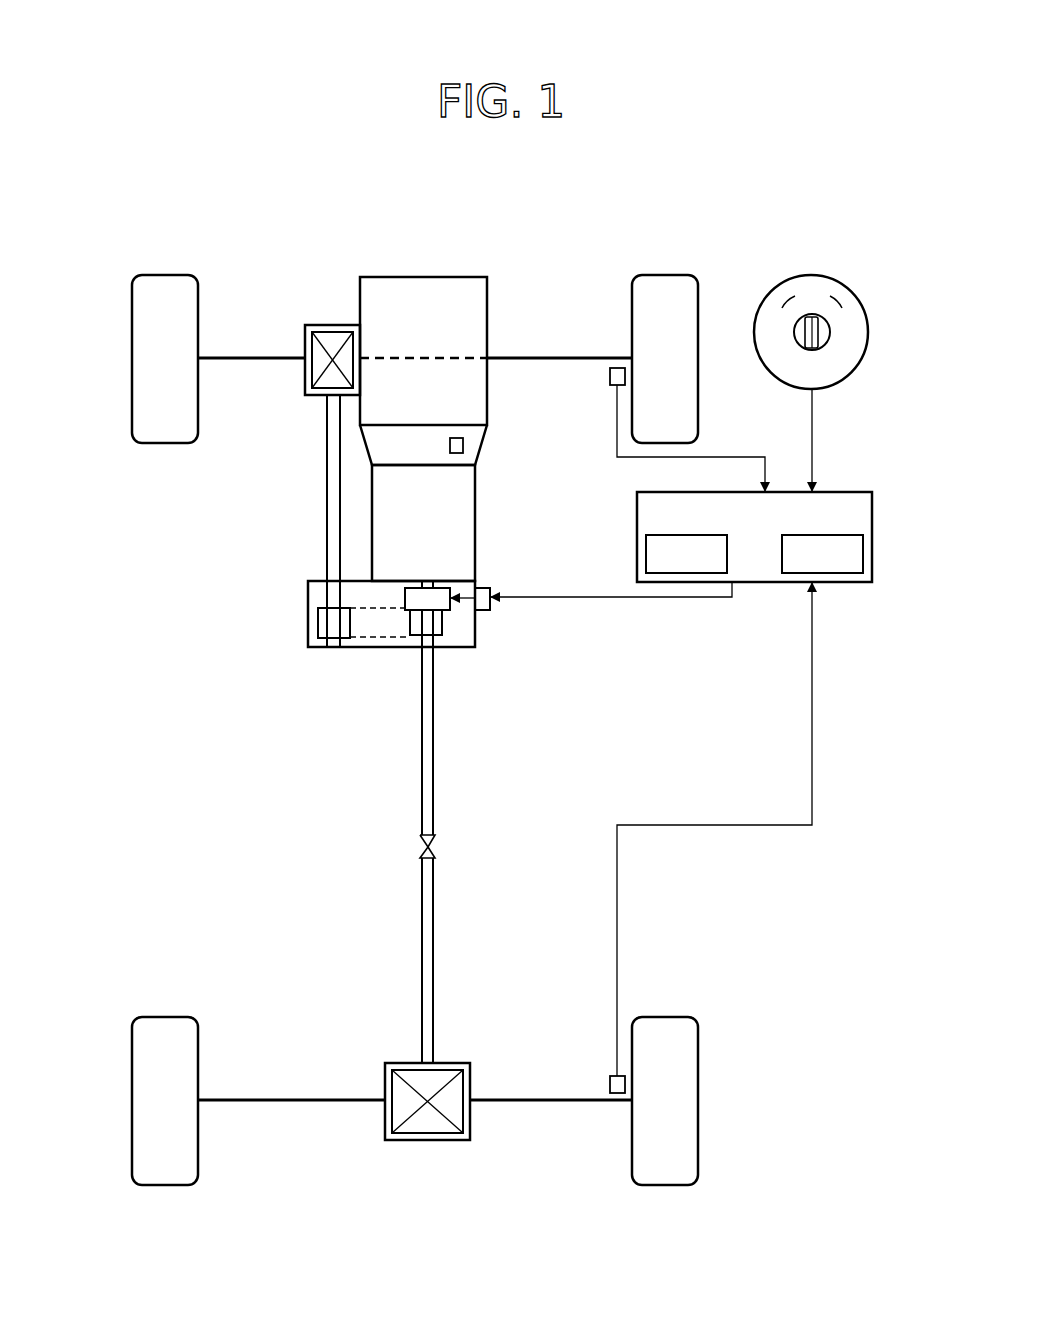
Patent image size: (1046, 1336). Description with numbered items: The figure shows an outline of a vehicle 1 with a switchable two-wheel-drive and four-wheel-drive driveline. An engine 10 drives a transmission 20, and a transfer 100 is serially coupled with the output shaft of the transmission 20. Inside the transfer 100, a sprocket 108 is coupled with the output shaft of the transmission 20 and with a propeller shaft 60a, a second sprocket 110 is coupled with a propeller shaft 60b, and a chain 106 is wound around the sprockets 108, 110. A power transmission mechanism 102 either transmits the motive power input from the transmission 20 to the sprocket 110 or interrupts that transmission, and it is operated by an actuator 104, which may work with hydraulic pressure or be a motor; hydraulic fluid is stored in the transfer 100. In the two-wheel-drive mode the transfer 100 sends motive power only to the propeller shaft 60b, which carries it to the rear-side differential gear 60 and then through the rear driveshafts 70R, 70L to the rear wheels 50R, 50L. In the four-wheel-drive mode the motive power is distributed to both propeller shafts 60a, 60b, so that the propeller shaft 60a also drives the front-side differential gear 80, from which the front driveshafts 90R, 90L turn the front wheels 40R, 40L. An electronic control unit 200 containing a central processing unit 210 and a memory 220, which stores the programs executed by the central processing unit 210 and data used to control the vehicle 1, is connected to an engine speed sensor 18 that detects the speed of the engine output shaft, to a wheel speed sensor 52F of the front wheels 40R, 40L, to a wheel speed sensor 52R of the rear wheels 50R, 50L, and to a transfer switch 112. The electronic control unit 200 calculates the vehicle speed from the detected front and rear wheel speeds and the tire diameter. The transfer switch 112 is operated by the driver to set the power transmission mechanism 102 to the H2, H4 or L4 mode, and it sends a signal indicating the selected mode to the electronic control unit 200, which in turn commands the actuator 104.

The vehicle 1 is at (599, 256).
The engine 10 is at (456, 277).
The engine speed sensor 18 is at (449, 446).
The transmission 20 is at (477, 503).
The front wheel 40L is at (131, 325).
The front wheel 40R is at (699, 400).
The rear wheel 50L is at (131, 1064).
The rear wheel 50R is at (699, 1056).
The wheel speed sensor 52F is at (609, 378).
The wheel speed sensor 52R is at (609, 1083).
The rear-side differential gear 60 is at (456, 1063).
The propeller shaft 60a is at (326, 508).
The propeller shaft 60b is at (437, 778).
The rear driveshaft 70L is at (251, 1103).
The rear driveshaft 70R is at (562, 1103).
The front-side differential gear 80 is at (305, 386).
The front driveshaft 90L is at (248, 356).
The front driveshaft 90R is at (560, 356).
The transfer 100 is at (307, 596).
The power transmission mechanism 102 is at (404, 600).
The actuator 104 is at (489, 586).
The chain 106 is at (364, 640).
The sprocket 108 is at (317, 625).
The sprocket 110 is at (444, 624).
The transfer switch 112 is at (869, 331).
The electronic control unit 200 is at (845, 492).
The central processing unit 210 is at (708, 534).
The memory 220 is at (802, 534).